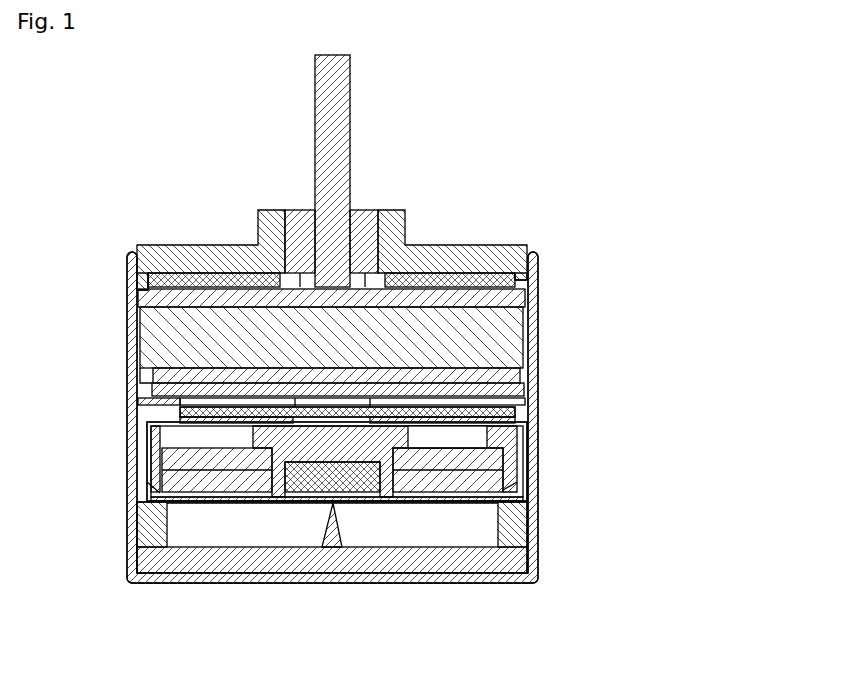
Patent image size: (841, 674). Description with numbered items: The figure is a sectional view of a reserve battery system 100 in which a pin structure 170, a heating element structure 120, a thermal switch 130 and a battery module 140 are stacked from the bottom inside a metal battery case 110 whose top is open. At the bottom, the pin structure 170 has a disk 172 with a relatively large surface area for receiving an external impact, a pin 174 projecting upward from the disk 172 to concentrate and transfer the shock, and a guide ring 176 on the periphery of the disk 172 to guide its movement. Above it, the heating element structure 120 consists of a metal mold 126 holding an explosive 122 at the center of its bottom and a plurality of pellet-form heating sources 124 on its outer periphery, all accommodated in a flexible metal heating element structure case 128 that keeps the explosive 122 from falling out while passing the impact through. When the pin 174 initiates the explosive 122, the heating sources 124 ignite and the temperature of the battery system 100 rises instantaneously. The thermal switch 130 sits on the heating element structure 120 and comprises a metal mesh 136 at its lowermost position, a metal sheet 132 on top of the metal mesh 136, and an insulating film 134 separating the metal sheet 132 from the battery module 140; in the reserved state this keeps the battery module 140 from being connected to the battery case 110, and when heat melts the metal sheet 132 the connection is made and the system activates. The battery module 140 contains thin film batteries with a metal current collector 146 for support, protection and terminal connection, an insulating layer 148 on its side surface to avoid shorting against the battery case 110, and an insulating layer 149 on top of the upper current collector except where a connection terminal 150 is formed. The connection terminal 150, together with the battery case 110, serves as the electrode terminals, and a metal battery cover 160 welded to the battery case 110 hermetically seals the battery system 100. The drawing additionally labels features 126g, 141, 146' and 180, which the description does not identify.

The battery system 100 is at (498, 137).
The battery case 110 is at (537, 270).
The heating element structure 120 is at (595, 390).
The explosive 122 is at (380, 485).
The heating source 124 is at (488, 460).
The mold 126 is at (507, 437).
The yoke gap 126g is at (419, 445).
The heating element structure case 128 is at (525, 417).
The thermal switch 130 is at (67, 387).
The metal sheet 132 is at (160, 413).
The insulating film 134 is at (152, 403).
The metal mesh 136 is at (163, 430).
The battery module 140 is at (145, 333).
The damping layer 141 is at (137, 293).
The current collector 146 is at (294, 360).
The spacer plate 146' is at (292, 379).
The insulating layer 148 is at (138, 313).
The insulating layer 149 is at (147, 276).
The connection terminal 150 is at (345, 92).
The battery cover 160 is at (182, 250).
The pin structure 170 is at (350, 638).
The disk 172 is at (338, 563).
The pin 174 is at (333, 503).
The guide ring 176 is at (155, 550).
The bushing 180 is at (300, 215).